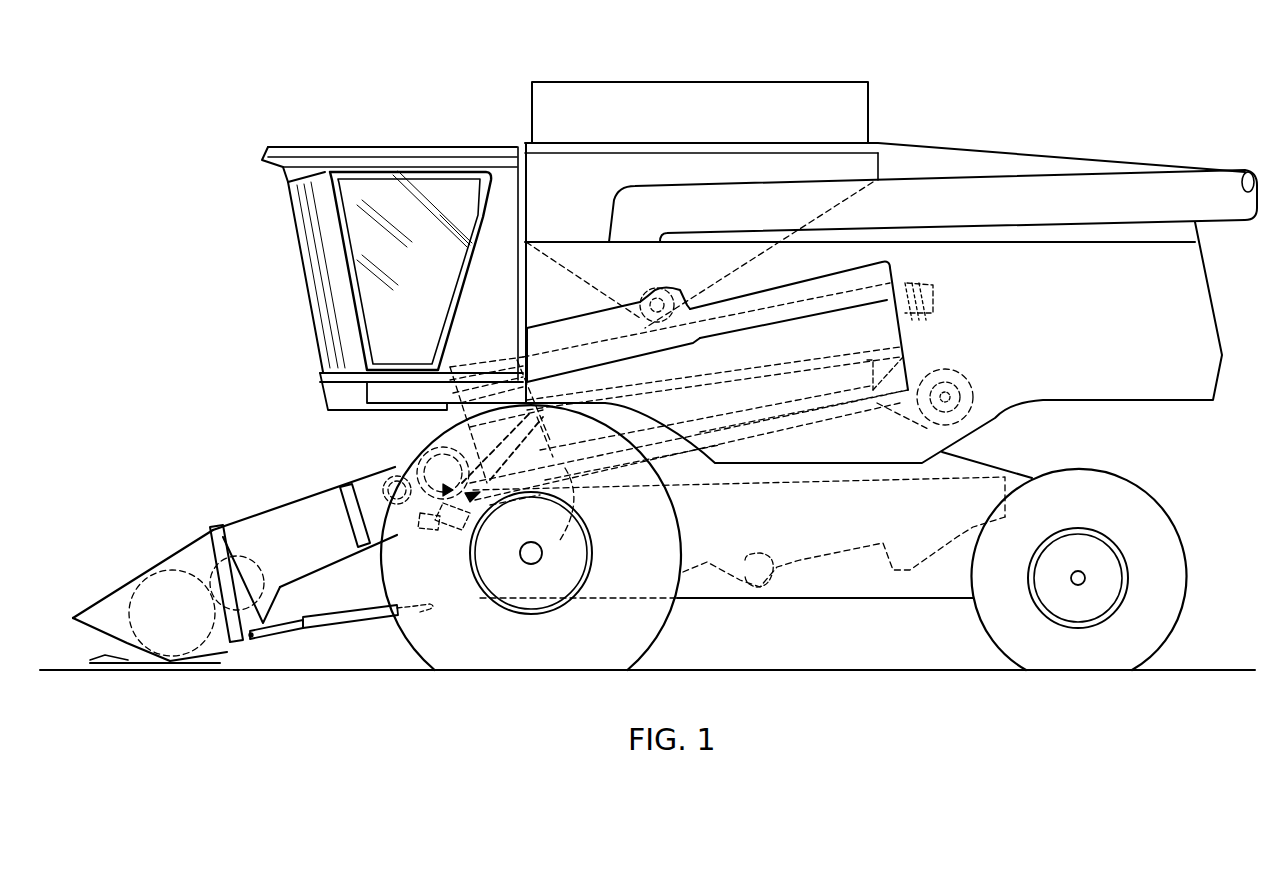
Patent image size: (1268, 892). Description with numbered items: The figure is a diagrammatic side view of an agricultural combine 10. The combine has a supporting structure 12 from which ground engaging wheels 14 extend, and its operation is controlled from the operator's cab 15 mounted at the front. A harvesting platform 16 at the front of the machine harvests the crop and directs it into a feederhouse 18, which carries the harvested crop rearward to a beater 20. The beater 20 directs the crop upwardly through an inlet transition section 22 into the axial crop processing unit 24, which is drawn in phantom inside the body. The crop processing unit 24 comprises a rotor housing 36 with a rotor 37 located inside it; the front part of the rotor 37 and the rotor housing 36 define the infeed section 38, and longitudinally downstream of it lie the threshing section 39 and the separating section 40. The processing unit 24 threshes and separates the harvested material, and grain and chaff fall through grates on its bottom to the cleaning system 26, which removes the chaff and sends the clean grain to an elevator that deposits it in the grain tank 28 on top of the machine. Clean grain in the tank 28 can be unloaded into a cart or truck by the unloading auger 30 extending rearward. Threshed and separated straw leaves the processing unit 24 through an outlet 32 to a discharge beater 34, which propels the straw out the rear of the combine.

The agricultural combine 10 is at (996, 68).
The supporting structure 12 is at (700, 483).
The ground engaging wheels 14 is at (605, 648).
The operator's cab 15 is at (433, 246).
The harvesting platform 16 is at (178, 552).
The feederhouse 18 is at (293, 505).
The beater 20 is at (412, 462).
The inlet transition section 22 is at (497, 443).
The axial crop processing unit 24 is at (803, 427).
The cleaning system 26 is at (810, 565).
The grain tank 28 is at (580, 196).
The unloading auger 30 is at (1128, 206).
The outlet 32 is at (917, 342).
The discharge beater 34 is at (968, 368).
The rotor housing 36 is at (612, 465).
The rotor 37 is at (565, 470).
The infeed section 38 is at (486, 352).
The threshing section 39 is at (572, 312).
The separating section 40 is at (802, 275).